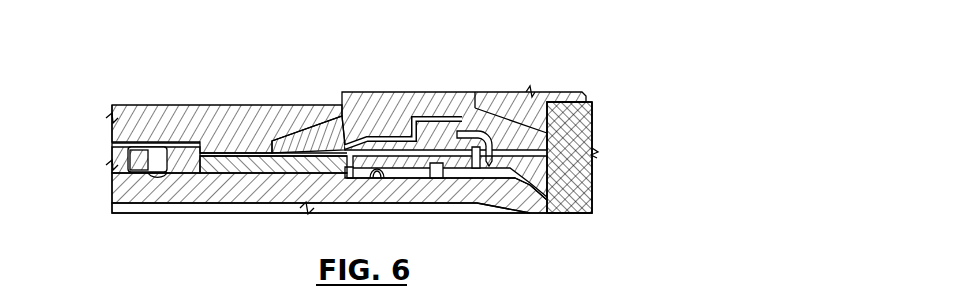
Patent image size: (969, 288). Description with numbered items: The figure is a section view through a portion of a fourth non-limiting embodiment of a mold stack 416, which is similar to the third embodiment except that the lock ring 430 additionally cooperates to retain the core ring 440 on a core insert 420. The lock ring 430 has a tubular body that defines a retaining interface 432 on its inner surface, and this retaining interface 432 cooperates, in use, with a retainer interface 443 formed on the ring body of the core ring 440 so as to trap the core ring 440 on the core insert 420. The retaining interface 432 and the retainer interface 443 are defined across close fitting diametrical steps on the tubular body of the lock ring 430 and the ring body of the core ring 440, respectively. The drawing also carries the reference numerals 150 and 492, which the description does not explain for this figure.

The sensor assembly 150 is at (480, 72).
The mold stack 416 is at (668, 93).
The core insert 420 is at (516, 204).
The lock ring 430 is at (208, 100).
The retaining interface 432 is at (207, 154).
The core ring 440 is at (208, 178).
The retainer interface 443 is at (205, 152).
The pocket seal 492 is at (140, 147).